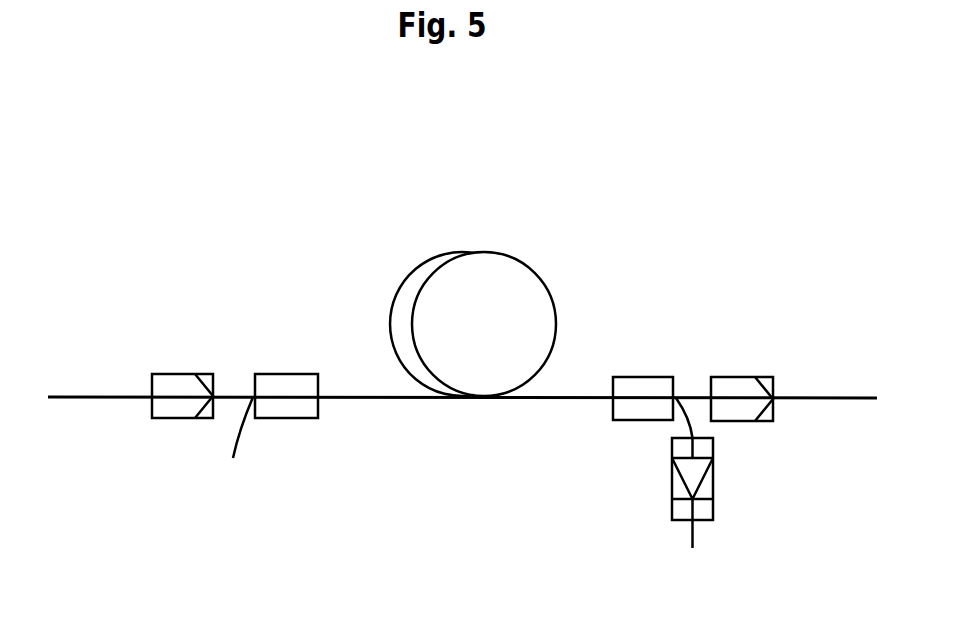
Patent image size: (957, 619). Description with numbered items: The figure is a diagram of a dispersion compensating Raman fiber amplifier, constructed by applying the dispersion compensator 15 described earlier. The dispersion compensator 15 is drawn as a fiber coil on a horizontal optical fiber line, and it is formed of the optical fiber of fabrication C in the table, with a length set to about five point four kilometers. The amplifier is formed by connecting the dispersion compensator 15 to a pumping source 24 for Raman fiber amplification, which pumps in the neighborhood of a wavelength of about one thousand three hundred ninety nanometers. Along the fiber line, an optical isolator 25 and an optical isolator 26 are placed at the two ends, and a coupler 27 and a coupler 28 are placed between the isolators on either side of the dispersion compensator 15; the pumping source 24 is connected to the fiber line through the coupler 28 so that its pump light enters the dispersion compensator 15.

The dispersion compensator 15 is at (388, 400).
The pumping source 24 is at (714, 483).
The optical isolator 25 is at (180, 372).
The optical isolator 26 is at (738, 375).
The coupler 27 is at (279, 372).
The coupler 28 is at (637, 375).